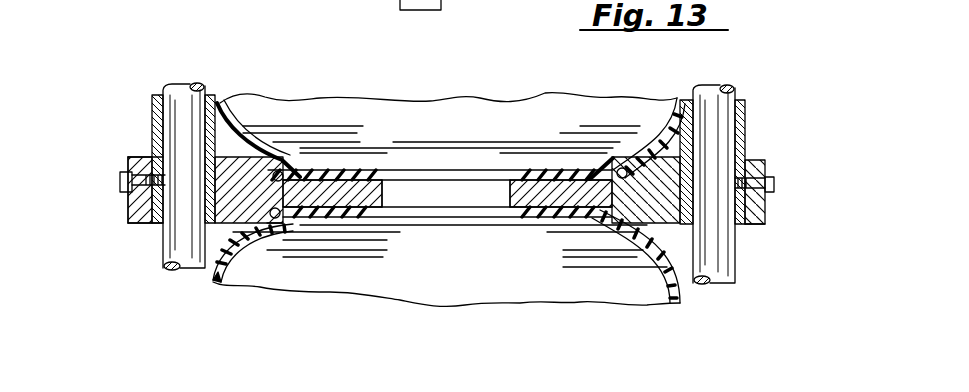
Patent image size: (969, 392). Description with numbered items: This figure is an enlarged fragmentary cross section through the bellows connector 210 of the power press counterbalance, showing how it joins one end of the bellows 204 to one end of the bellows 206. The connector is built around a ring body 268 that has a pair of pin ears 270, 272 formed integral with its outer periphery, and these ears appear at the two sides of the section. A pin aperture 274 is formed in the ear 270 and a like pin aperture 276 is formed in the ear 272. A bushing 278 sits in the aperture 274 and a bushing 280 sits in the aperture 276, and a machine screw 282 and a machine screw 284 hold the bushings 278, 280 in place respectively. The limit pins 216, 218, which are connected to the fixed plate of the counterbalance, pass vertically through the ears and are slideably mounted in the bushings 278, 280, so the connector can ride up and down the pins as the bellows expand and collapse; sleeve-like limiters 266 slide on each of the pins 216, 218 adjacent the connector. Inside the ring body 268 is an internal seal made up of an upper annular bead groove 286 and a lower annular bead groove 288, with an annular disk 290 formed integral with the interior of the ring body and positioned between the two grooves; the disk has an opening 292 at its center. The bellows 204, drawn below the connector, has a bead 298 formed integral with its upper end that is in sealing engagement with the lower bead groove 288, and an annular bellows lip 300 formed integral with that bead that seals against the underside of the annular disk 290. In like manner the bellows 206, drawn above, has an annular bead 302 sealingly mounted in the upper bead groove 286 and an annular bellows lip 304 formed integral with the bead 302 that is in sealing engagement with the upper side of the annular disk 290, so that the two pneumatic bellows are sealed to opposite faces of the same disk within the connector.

The bellows 204 is at (687, 307).
The bellows 206 is at (657, 120).
The bellows connector 210 is at (123, 217).
The limit pin 216 is at (185, 256).
The limit pin 218 is at (713, 273).
The sleeve-like limiter 266 is at (153, 135).
The ring body 268 is at (227, 168).
The pin ear 270 is at (135, 223).
The pin ear 272 is at (752, 227).
The pin aperture 274 is at (153, 157).
The pin aperture 276 is at (743, 167).
The bushing 278 is at (153, 224).
The bushing 280 is at (738, 207).
The machine screw 282 is at (118, 180).
The machine screw 284 is at (773, 187).
The upper annular bead groove 286 is at (280, 172).
The lower annular bead groove 288 is at (272, 225).
The annular disk 290 is at (320, 193).
The opening 292 is at (458, 197).
The bead 298 is at (298, 227).
The annular bellows lip 300 is at (365, 196).
The annular bead 302 is at (265, 172).
The annular bellows lip 304 is at (337, 171).